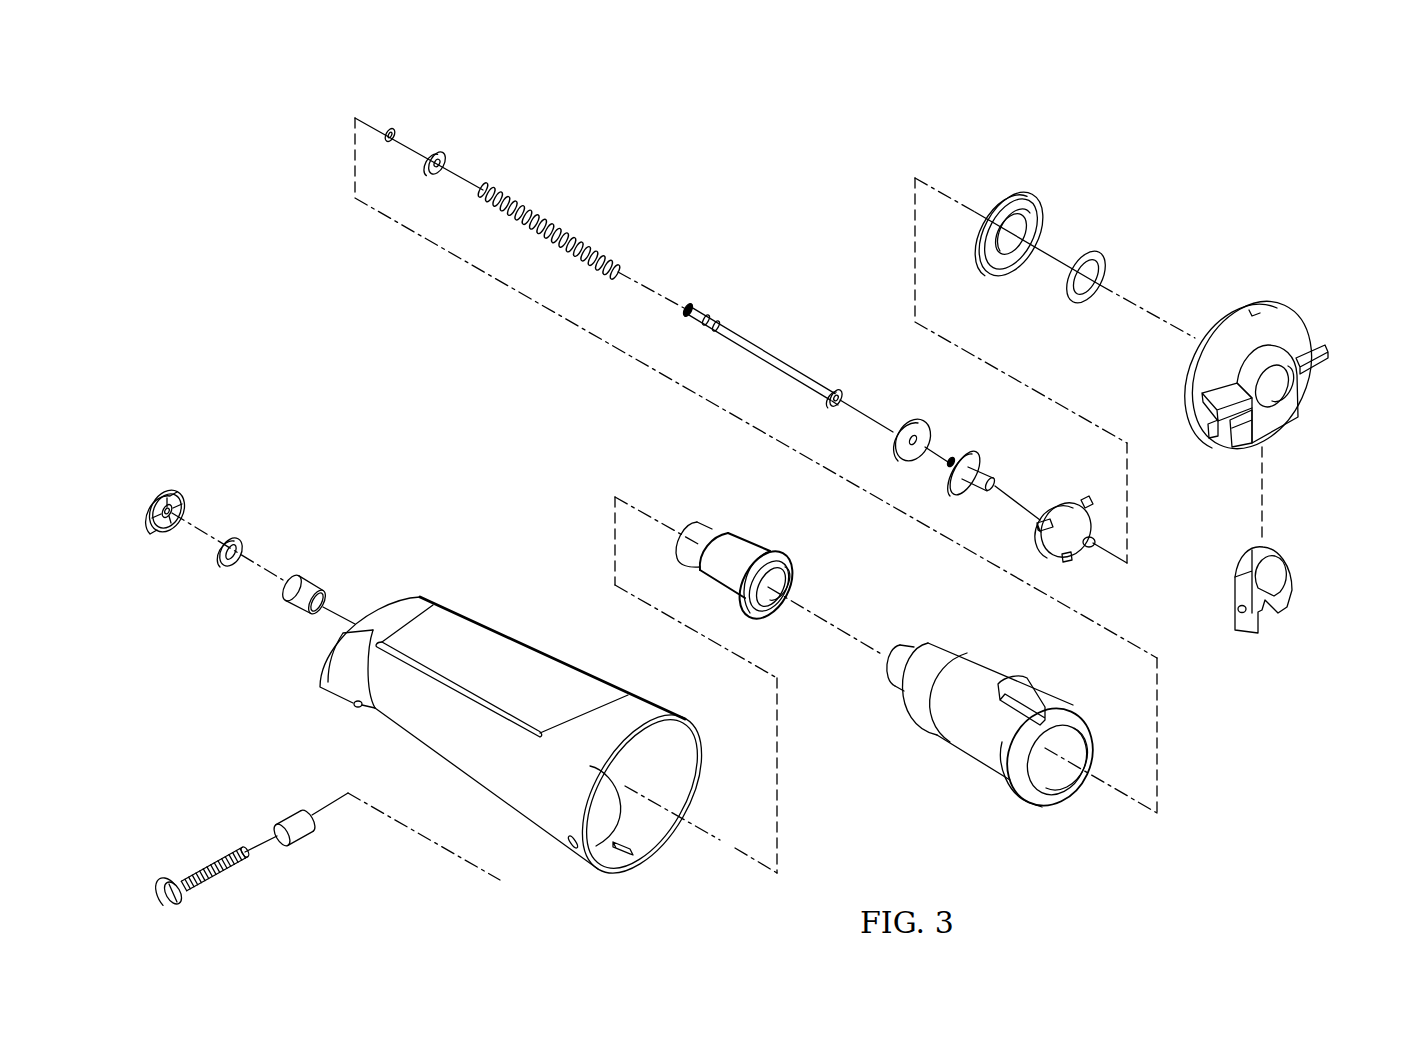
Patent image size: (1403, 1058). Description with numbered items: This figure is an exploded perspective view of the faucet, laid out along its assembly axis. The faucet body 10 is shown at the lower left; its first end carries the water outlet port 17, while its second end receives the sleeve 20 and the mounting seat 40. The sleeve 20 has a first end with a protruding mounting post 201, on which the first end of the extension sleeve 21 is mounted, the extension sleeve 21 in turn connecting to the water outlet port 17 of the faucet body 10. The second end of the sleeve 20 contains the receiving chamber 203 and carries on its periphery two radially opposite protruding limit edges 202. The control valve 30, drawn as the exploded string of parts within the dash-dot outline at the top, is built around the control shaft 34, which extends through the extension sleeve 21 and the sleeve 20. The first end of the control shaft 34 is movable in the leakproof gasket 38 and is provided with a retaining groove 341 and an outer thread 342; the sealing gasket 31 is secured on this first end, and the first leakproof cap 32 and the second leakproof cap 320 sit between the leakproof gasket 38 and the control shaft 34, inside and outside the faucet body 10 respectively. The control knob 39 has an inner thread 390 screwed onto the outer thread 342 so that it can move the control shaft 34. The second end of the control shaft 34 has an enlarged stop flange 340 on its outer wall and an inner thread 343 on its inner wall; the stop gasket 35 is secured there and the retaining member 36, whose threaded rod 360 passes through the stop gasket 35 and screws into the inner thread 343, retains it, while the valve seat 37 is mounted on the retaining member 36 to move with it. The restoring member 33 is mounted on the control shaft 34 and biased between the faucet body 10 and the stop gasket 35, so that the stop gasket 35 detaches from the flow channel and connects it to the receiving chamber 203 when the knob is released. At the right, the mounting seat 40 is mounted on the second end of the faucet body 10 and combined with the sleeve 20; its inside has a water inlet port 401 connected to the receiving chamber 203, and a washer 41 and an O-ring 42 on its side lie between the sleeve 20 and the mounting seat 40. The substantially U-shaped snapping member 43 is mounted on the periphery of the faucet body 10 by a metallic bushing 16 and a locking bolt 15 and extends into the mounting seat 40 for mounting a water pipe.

The faucet body 10 is at (670, 845).
The locking bolt 15 is at (197, 875).
The metallic bushing 16 is at (291, 826).
The water outlet port 17 is at (340, 703).
The sleeve 20 is at (1090, 796).
The mounting post 201 is at (901, 662).
The limit edges 202 is at (1042, 708).
The receiving chamber 203 is at (1043, 753).
The extension sleeve 21 is at (732, 550).
The control valve 30 is at (350, 128).
The sealing gasket 31 is at (390, 130).
The first leakproof cap 32 is at (435, 151).
The second leakproof cap 320 is at (233, 540).
The restoring member 33 is at (538, 212).
The control shaft 34 is at (745, 340).
The stop flange 340 is at (833, 396).
The retaining groove 341 is at (708, 316).
The outer thread 342 is at (687, 305).
The inner thread 343 is at (840, 396).
The stop gasket 35 is at (905, 421).
The retaining member 36 is at (977, 456).
The threaded rod 360 is at (951, 459).
The valve seat 37 is at (1060, 516).
The leakproof gasket 38 is at (308, 580).
The control knob 39 is at (168, 490).
The inner thread 390 is at (176, 516).
The mounting seat 40 is at (1278, 323).
The water inlet port 401 is at (1310, 403).
The washer 41 is at (1015, 210).
The O-ring 42 is at (1095, 255).
The snapping member 43 is at (1285, 595).